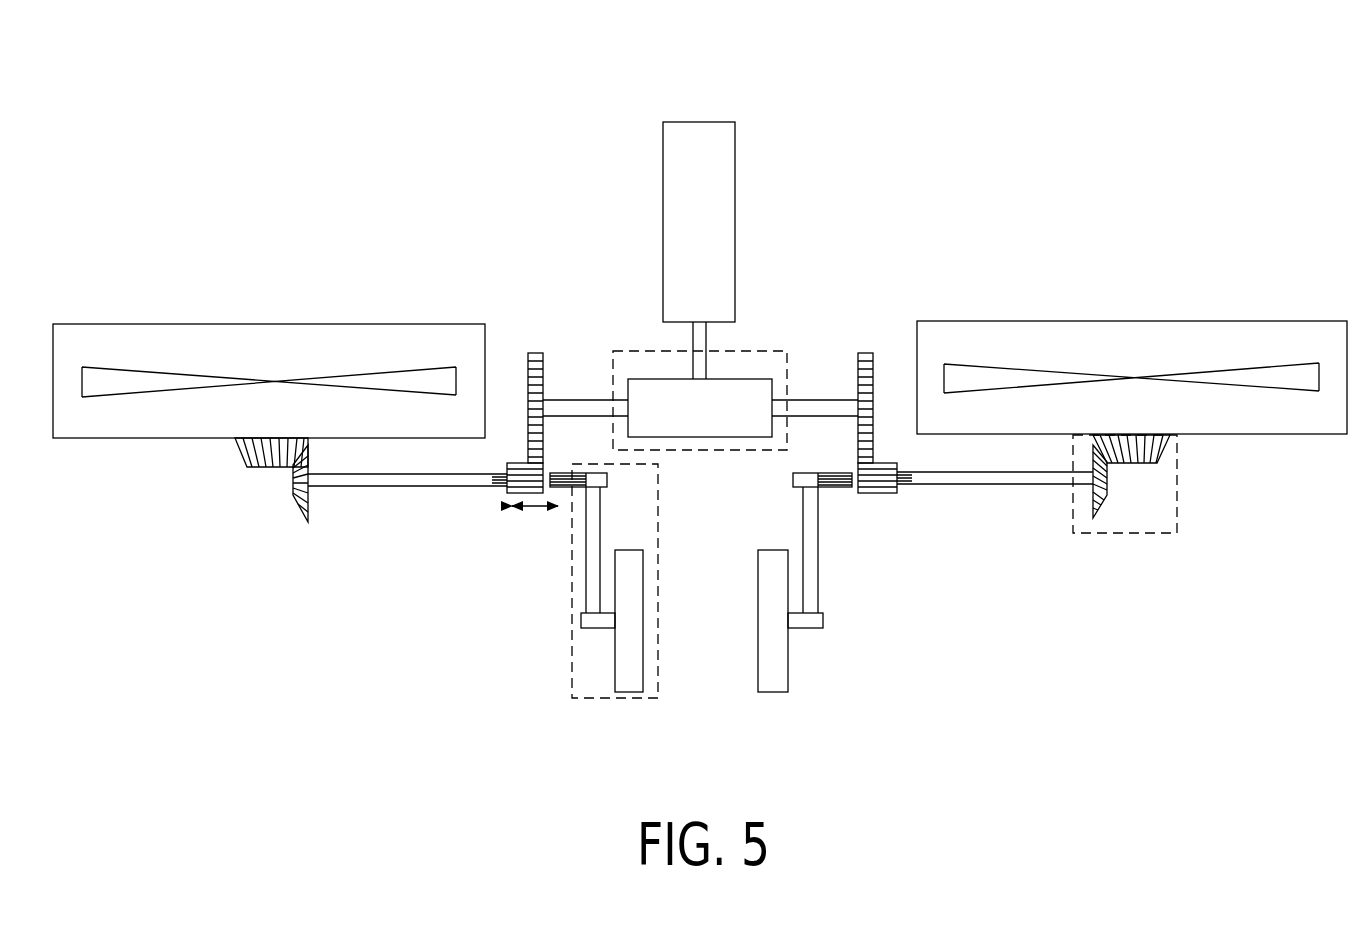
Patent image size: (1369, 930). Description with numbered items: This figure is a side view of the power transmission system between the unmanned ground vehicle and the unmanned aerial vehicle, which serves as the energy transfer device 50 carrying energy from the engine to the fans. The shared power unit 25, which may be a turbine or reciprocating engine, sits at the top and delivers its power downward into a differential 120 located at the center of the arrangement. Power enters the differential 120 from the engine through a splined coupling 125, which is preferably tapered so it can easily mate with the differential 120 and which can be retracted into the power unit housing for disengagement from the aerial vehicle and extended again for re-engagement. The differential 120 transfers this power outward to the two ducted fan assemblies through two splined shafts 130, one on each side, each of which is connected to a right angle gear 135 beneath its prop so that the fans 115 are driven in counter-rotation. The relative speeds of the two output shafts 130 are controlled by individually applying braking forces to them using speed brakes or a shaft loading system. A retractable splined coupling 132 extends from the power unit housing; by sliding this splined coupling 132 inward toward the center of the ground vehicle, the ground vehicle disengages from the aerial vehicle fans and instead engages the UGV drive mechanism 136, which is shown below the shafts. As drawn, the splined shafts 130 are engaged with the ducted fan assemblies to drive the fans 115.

The energy transfer device 50 is at (700, 418).
The power unit 25 is at (735, 180).
The splined coupling 125 is at (693, 337).
The differential 120 is at (753, 348).
The fans 115 is at (1020, 367).
The retractable splined coupling 132 is at (880, 498).
The splined shafts 130 is at (972, 498).
The right angle gear 135 is at (1130, 533).
The UGV drive mechanism 136 is at (603, 700).